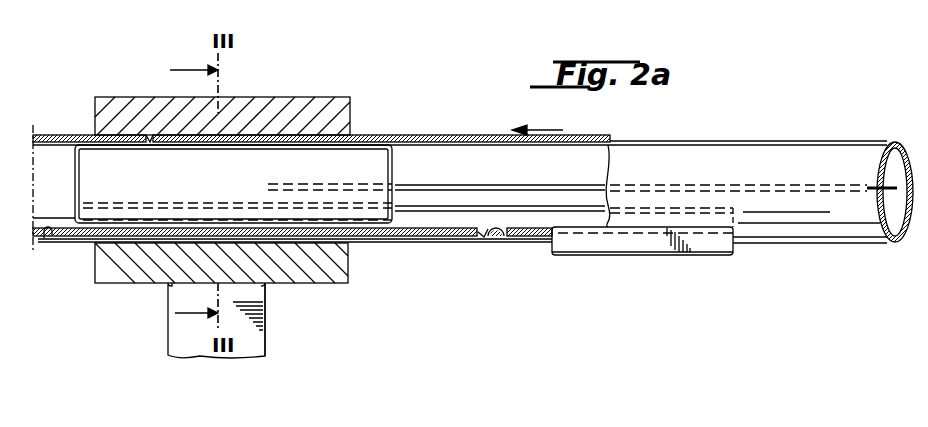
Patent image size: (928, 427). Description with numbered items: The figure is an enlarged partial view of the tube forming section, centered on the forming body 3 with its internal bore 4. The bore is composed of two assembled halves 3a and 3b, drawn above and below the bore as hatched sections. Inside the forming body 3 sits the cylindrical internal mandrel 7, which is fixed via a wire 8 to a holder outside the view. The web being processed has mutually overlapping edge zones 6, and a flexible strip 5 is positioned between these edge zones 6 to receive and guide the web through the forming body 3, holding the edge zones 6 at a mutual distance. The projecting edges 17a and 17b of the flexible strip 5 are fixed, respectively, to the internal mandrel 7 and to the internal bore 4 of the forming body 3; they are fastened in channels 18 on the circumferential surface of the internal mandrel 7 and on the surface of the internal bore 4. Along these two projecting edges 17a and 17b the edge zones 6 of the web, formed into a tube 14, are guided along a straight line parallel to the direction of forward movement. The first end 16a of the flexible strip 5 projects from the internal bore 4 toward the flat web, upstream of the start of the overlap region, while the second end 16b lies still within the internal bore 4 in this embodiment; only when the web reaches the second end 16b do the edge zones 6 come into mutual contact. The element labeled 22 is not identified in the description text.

The forming body 3 is at (249, 202).
The first half of forming body 3a is at (343, 118).
The second half of forming body 3b is at (337, 267).
The internal bore 4 is at (129, 150).
The flexible strip 5 is at (458, 240).
The edge zones 6 is at (60, 217).
The internal mandrel 7 is at (370, 158).
The wire 8 is at (430, 185).
The tube 14 is at (440, 140).
The first end of flexible strip 16a is at (740, 250).
The second end of flexible strip 16b is at (108, 213).
The projecting edge of flexible strip 17a is at (587, 205).
The projecting edge of flexible strip 17b is at (603, 258).
The channels 18 is at (210, 212).
The spring clip 22 is at (48, 233).